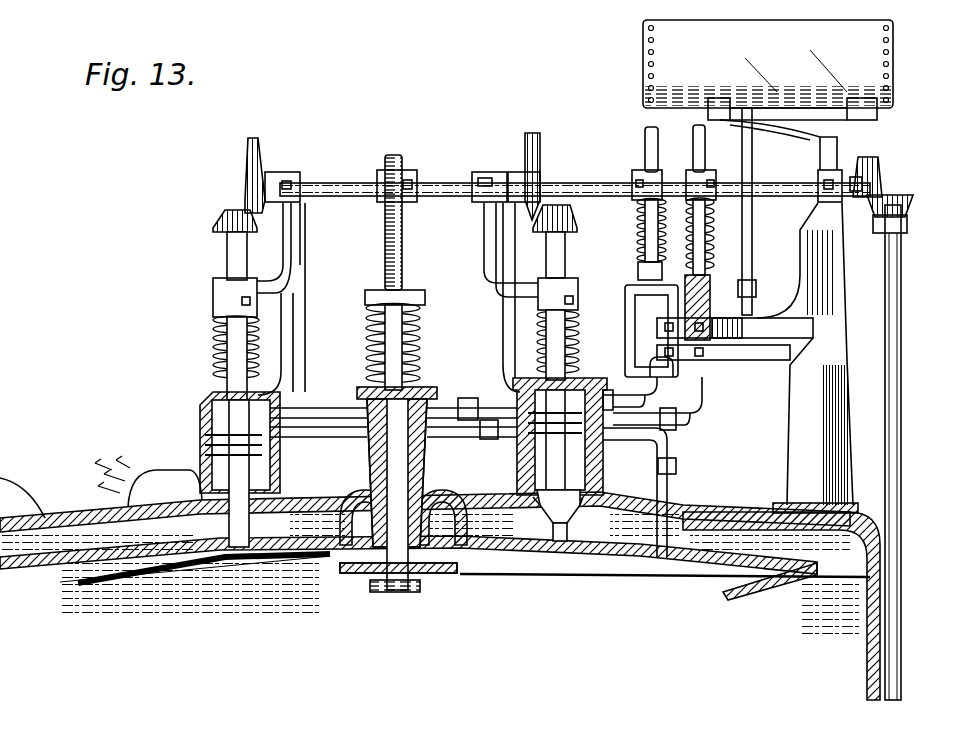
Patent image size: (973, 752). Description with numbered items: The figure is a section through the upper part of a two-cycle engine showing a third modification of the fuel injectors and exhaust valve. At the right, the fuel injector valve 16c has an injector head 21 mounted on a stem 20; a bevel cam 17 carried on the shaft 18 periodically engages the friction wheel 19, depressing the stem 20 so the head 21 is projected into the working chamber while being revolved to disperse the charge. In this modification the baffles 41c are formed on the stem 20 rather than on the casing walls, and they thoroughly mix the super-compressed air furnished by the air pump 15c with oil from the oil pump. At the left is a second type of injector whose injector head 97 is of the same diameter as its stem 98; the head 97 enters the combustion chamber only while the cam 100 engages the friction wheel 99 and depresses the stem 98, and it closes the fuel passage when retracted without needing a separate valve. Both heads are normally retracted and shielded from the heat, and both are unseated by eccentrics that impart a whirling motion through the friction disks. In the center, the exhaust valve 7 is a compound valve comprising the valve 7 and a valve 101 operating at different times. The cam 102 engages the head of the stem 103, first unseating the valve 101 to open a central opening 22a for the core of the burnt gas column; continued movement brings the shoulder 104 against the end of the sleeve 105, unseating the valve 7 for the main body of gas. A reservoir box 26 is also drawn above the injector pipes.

The exhaust valve 7 is at (452, 574).
The bevel cam 17 is at (536, 151).
The shaft 18 is at (571, 183).
The friction wheel 19 is at (572, 218).
The stem 20 is at (563, 266).
The injector head 21 is at (510, 543).
The central opening 22a is at (425, 576).
The reservoir box 26 is at (702, 302).
The air pump 15c is at (695, 377).
The fuel injector valve 16c is at (603, 440).
The baffles 41c is at (523, 440).
The injector head 97 is at (226, 576).
The stem 98 is at (220, 320).
The friction wheel 99 is at (222, 232).
The cam 100 is at (248, 153).
The valve 101 is at (395, 592).
The cam 102 is at (399, 265).
The stem 103 is at (414, 329).
The shoulder 104 is at (416, 369).
The sleeve 105 is at (432, 389).